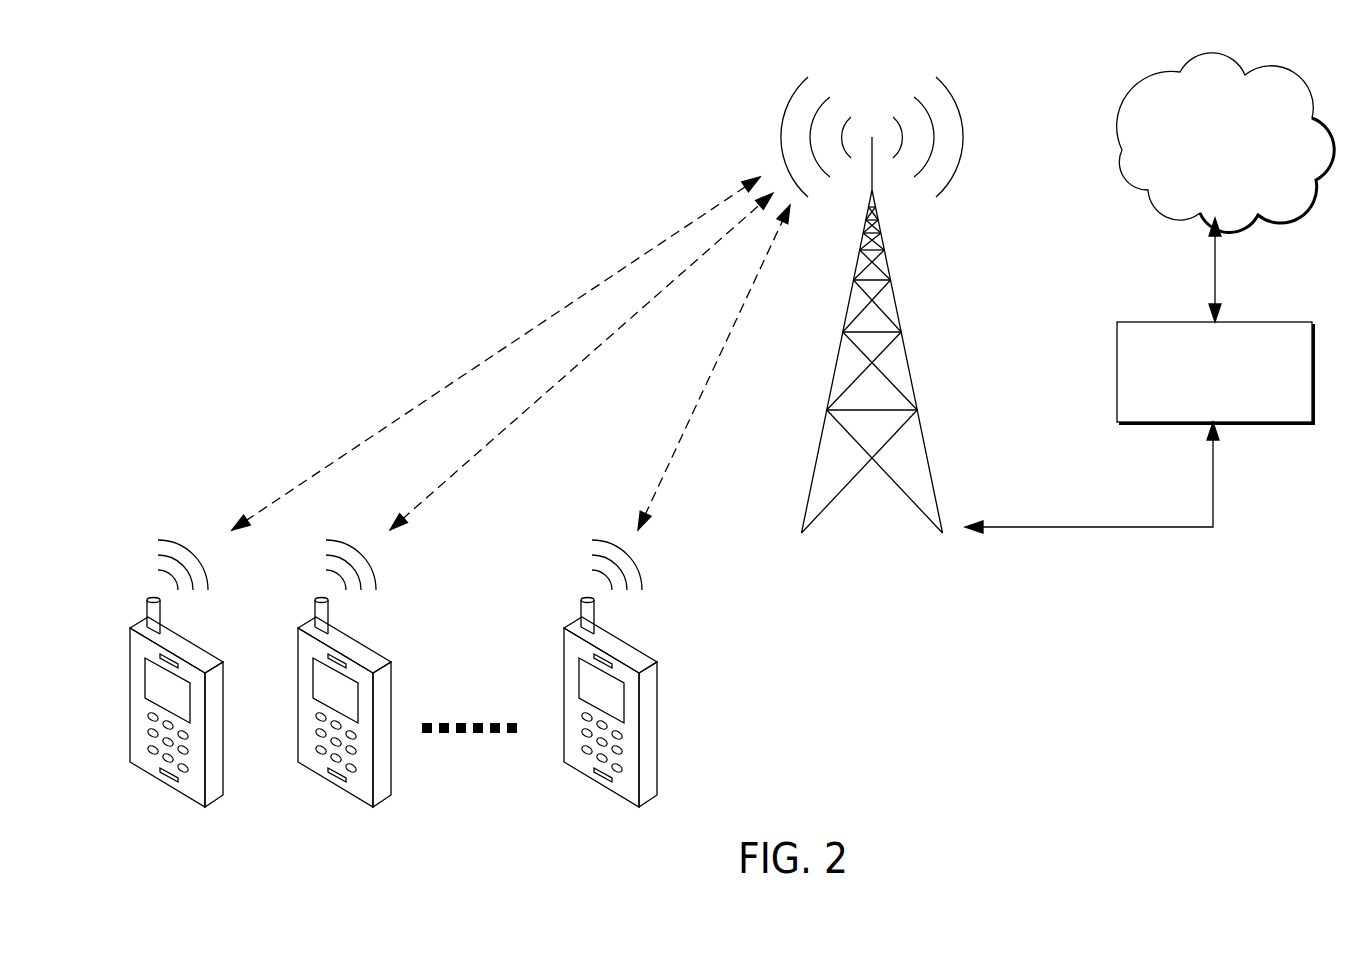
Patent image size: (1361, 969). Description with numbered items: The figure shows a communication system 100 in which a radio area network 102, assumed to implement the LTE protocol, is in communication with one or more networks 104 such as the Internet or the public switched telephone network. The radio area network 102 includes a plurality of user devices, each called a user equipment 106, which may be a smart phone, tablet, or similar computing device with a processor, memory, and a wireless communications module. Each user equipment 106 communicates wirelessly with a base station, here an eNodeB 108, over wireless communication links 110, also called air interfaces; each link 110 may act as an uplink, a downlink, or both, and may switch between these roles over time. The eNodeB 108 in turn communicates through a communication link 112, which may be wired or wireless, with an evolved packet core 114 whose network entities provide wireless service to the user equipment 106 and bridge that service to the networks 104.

The communication system 100 is at (1287, 747).
The radio area network 102 is at (315, 152).
The networks 104 is at (1122, 148).
The user equipment 106 is at (130, 697).
The eNodeB 108 is at (909, 372).
The wireless communication links 110 is at (495, 353).
The communication link 112 is at (1213, 480).
The evolved packet core 114 is at (1117, 372).